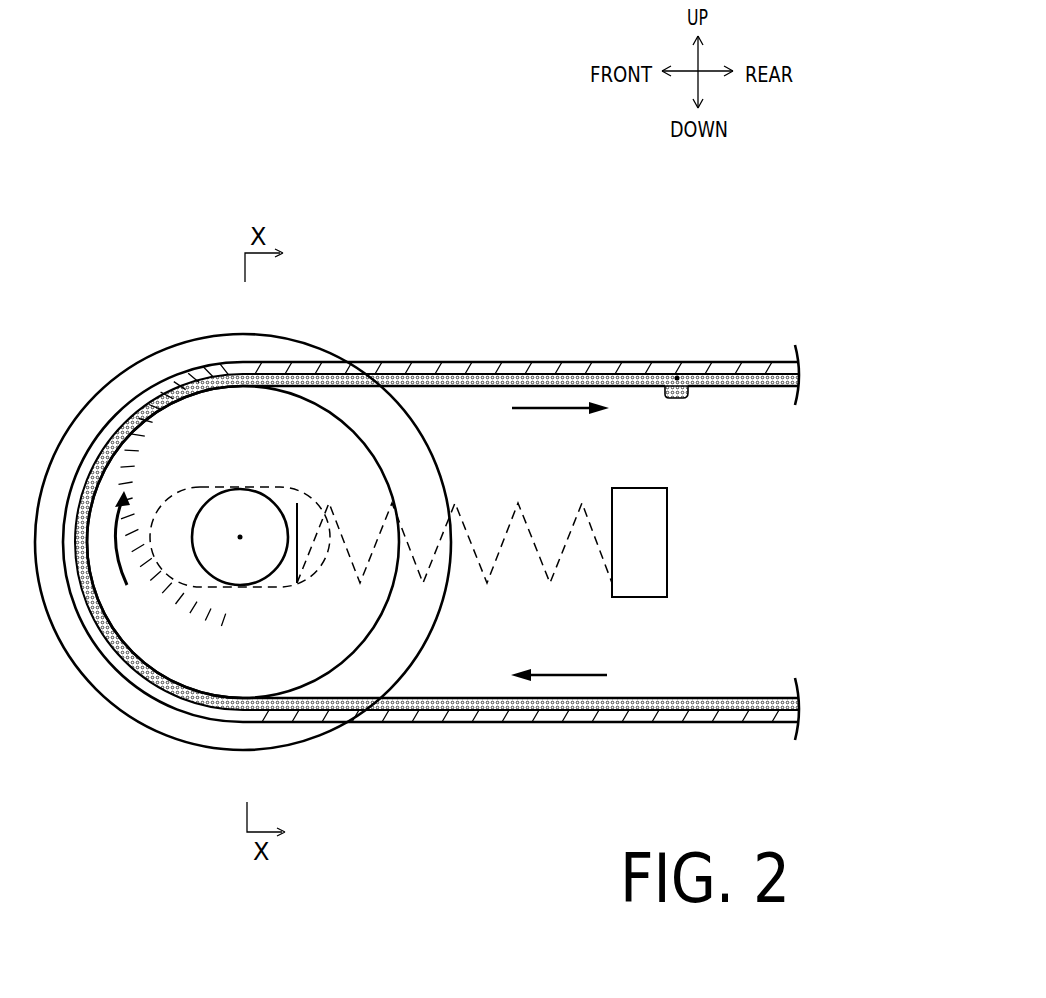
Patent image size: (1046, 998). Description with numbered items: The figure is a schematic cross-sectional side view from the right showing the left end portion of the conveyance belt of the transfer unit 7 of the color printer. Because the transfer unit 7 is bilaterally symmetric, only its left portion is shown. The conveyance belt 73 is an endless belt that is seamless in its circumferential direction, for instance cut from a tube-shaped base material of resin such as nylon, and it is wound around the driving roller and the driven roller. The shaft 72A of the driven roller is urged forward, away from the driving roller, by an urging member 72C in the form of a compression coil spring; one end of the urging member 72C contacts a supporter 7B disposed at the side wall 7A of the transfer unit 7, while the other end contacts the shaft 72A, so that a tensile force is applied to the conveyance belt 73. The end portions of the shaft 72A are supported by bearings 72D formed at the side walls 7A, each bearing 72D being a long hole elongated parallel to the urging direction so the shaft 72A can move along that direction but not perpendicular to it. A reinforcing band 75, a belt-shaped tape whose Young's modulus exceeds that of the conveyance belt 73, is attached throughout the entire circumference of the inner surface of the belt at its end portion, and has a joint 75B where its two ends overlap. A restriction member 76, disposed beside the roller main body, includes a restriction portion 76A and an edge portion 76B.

The transfer unit 7 is at (606, 251).
The side wall 7A is at (687, 533).
The supporter 7B is at (612, 517).
The shaft 72A is at (250, 502).
The urging member 72C is at (492, 572).
The bearing 72D is at (170, 508).
The conveyance belt 73 is at (663, 362).
The reinforcing band 75 is at (431, 542).
The joint 75B is at (693, 412).
The restriction member 76 is at (154, 373).
The restriction portion 76A is at (260, 348).
The edge portion 76B is at (223, 412).